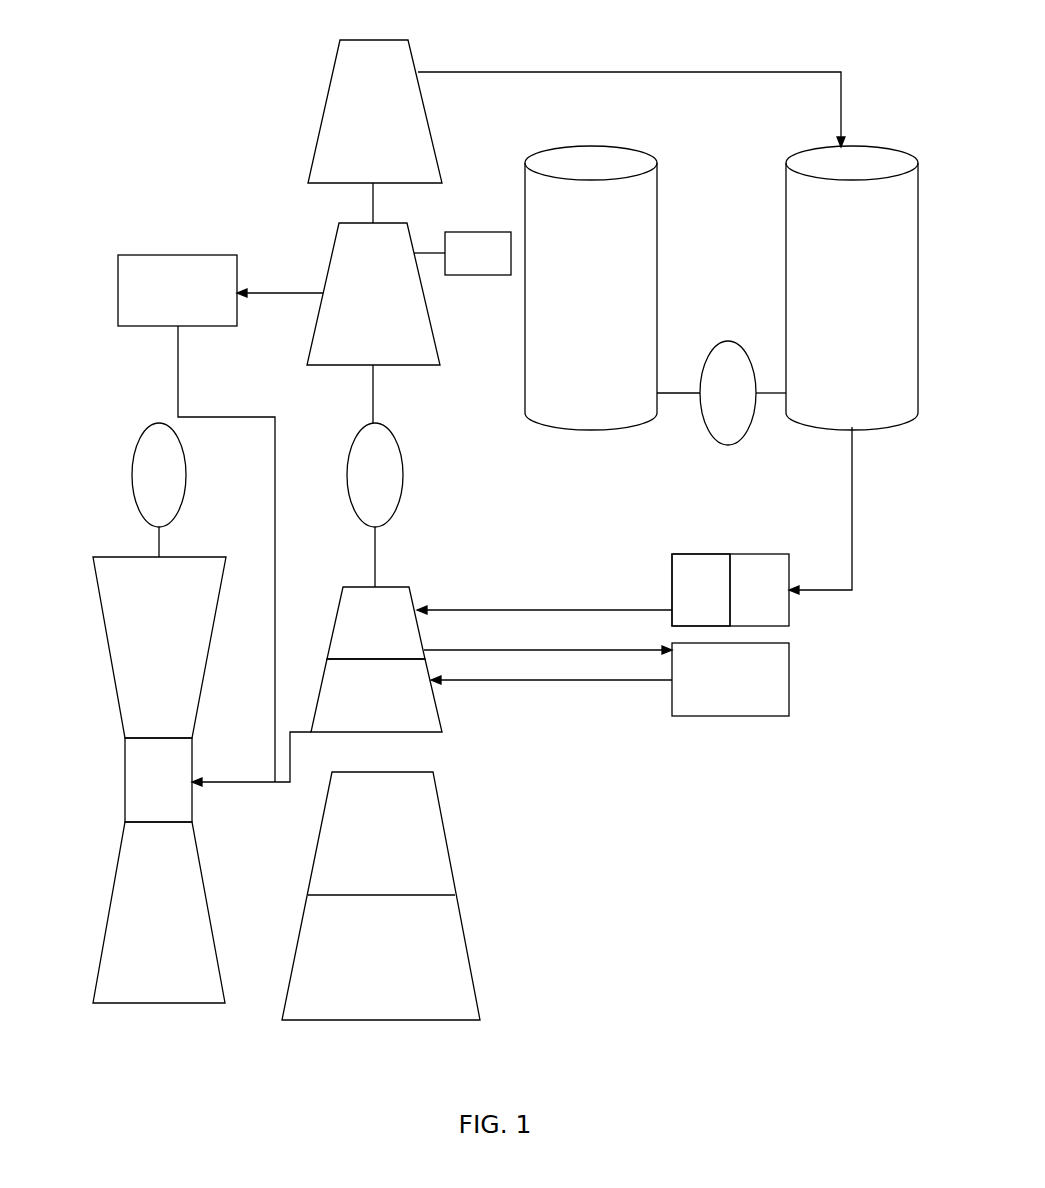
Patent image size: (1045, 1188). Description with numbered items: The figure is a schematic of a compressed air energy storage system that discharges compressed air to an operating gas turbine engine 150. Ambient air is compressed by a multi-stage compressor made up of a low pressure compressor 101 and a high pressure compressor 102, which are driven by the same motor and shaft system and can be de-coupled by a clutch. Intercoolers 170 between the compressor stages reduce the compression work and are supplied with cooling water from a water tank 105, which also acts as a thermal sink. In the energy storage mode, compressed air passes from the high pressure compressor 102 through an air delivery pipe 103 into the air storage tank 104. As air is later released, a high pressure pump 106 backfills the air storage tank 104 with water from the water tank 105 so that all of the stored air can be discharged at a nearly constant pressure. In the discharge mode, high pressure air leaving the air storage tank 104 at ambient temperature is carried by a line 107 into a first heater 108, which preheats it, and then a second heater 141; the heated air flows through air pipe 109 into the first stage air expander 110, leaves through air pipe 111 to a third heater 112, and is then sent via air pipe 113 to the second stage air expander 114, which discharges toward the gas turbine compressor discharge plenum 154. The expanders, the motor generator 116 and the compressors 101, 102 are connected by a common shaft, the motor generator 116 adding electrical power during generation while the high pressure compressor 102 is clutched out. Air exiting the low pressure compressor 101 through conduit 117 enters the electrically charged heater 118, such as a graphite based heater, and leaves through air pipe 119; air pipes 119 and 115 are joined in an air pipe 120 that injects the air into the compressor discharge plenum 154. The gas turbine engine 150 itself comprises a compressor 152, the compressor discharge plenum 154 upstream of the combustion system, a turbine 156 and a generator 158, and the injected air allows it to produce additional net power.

The low pressure compressor 101 is at (373, 323).
The high pressure compressor 102 is at (375, 131).
The air delivery pipe 103 is at (657, 70).
The air storage tank 104 is at (852, 288).
The water tank 105 is at (591, 288).
The high pressure pump 106 is at (721, 393).
The supply line 107 is at (852, 522).
The first heater 108 is at (777, 598).
The air pipe 109 is at (544, 598).
The first stage air expander 110 is at (376, 623).
The air pipe 111 is at (548, 638).
The third heater 112 is at (730, 679).
The air pipe 113 is at (551, 669).
The second stage air expander 114 is at (376, 695).
The air pipe 115 is at (290, 752).
The motor generator 116 is at (375, 505).
The conduit 117 is at (280, 282).
The heater 118 is at (177, 290).
The air pipe 119 is at (220, 417).
The air pipe 120 is at (251, 759).
The second heater 141 is at (702, 590).
The gas turbine engine 150 is at (128, 713).
The compressor 152 is at (159, 647).
The compressor discharge plenum 154 is at (158, 780).
The turbine 156 is at (159, 912).
The generator 158 is at (159, 490).
The intercoolers 170 is at (462, 253).